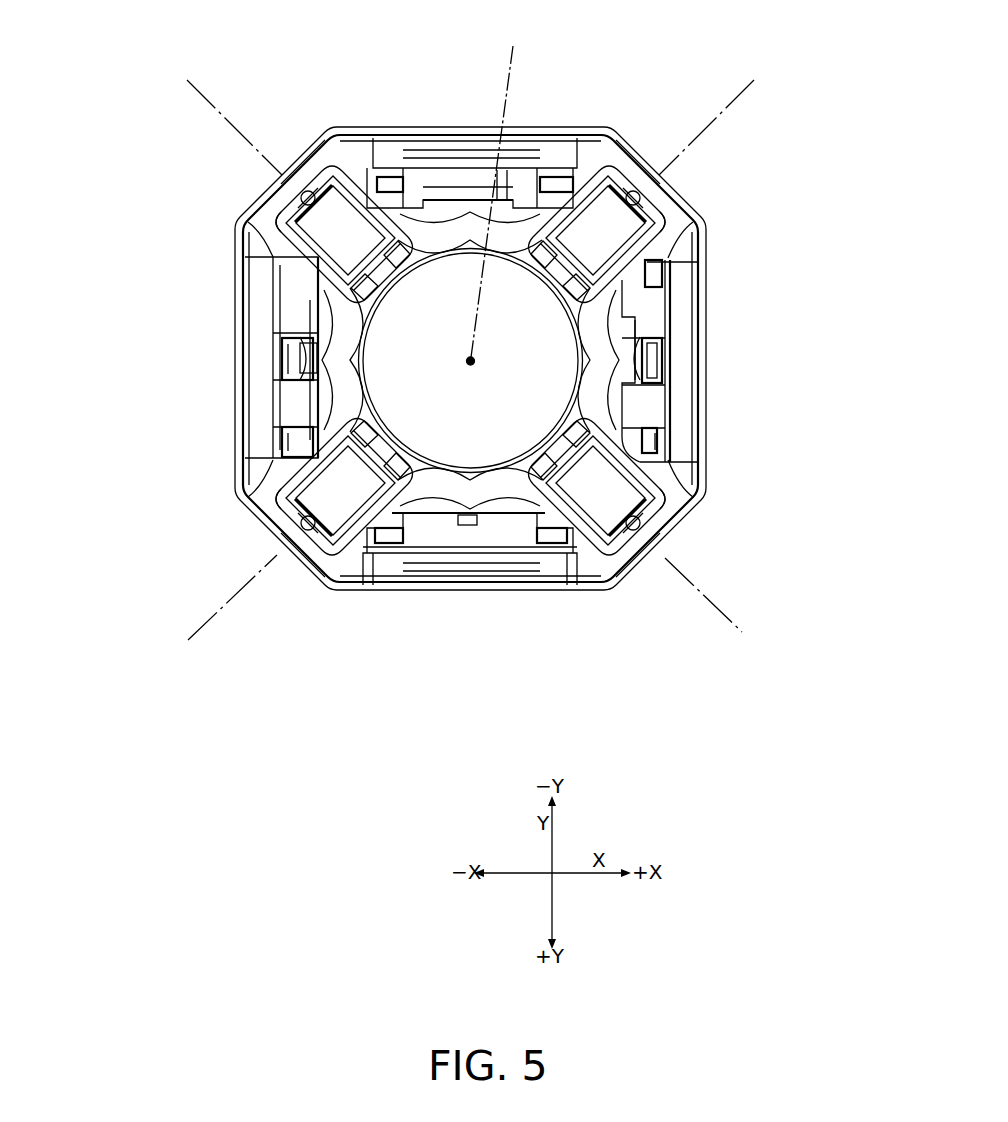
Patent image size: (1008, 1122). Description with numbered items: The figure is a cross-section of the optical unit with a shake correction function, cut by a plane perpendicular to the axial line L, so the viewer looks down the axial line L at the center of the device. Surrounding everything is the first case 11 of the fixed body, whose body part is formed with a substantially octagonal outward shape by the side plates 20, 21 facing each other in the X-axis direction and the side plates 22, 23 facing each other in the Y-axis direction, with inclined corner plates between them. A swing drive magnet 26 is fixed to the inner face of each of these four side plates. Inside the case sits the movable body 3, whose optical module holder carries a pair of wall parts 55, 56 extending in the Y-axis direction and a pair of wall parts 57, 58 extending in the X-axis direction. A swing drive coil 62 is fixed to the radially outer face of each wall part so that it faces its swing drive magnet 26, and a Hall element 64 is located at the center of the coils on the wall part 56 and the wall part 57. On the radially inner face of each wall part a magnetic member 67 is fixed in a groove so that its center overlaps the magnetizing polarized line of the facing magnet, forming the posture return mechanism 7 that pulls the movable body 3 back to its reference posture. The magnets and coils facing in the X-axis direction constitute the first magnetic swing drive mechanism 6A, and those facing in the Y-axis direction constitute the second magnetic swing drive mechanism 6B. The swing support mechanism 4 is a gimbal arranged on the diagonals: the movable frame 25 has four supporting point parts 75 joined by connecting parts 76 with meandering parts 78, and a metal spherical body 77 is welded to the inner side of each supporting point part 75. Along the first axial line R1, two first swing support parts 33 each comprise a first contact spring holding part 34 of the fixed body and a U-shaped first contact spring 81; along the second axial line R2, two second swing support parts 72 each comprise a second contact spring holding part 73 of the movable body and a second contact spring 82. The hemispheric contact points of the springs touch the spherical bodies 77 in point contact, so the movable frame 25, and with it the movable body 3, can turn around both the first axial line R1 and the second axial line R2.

The movable body 3 is at (406, 250).
The swing support mechanism 4 is at (692, 230).
The posture return mechanism 7 is at (477, 170).
The axial line L is at (493, 195).
The first magnetic swing drive mechanism 6A is at (150, 413).
The second magnetic swing drive mechanism 6B is at (600, 57).
The first case 11 is at (252, 196).
The side plate 20 is at (705, 360).
The side plate 21 is at (238, 482).
The side plate 22 is at (580, 590).
The side plate 23 is at (377, 136).
The movable frame 25 is at (632, 292).
The swing drive magnet 26 is at (527, 150).
The first swing support part 33 is at (276, 206).
The first contact spring holding part 34 is at (300, 190).
The wall part 55 is at (658, 413).
The wall part 56 is at (262, 405).
The wall part 57 is at (507, 545).
The wall part 58 is at (428, 168).
The swing drive coil 62 is at (553, 176).
The Hall element 64 is at (468, 527).
The magnetic member 67 is at (456, 178).
The second swing support part 72 is at (628, 172).
The second contact spring holding part 73 is at (613, 162).
The supporting point part 75 is at (672, 152).
The connecting part 76 is at (652, 275).
The spherical body 77 is at (289, 170).
The meandering part 78 is at (660, 384).
The first contact spring 81 is at (311, 192).
The second contact spring 82 is at (676, 232).
The first axial line R1 is at (722, 608).
The second axial line R2 is at (219, 608).